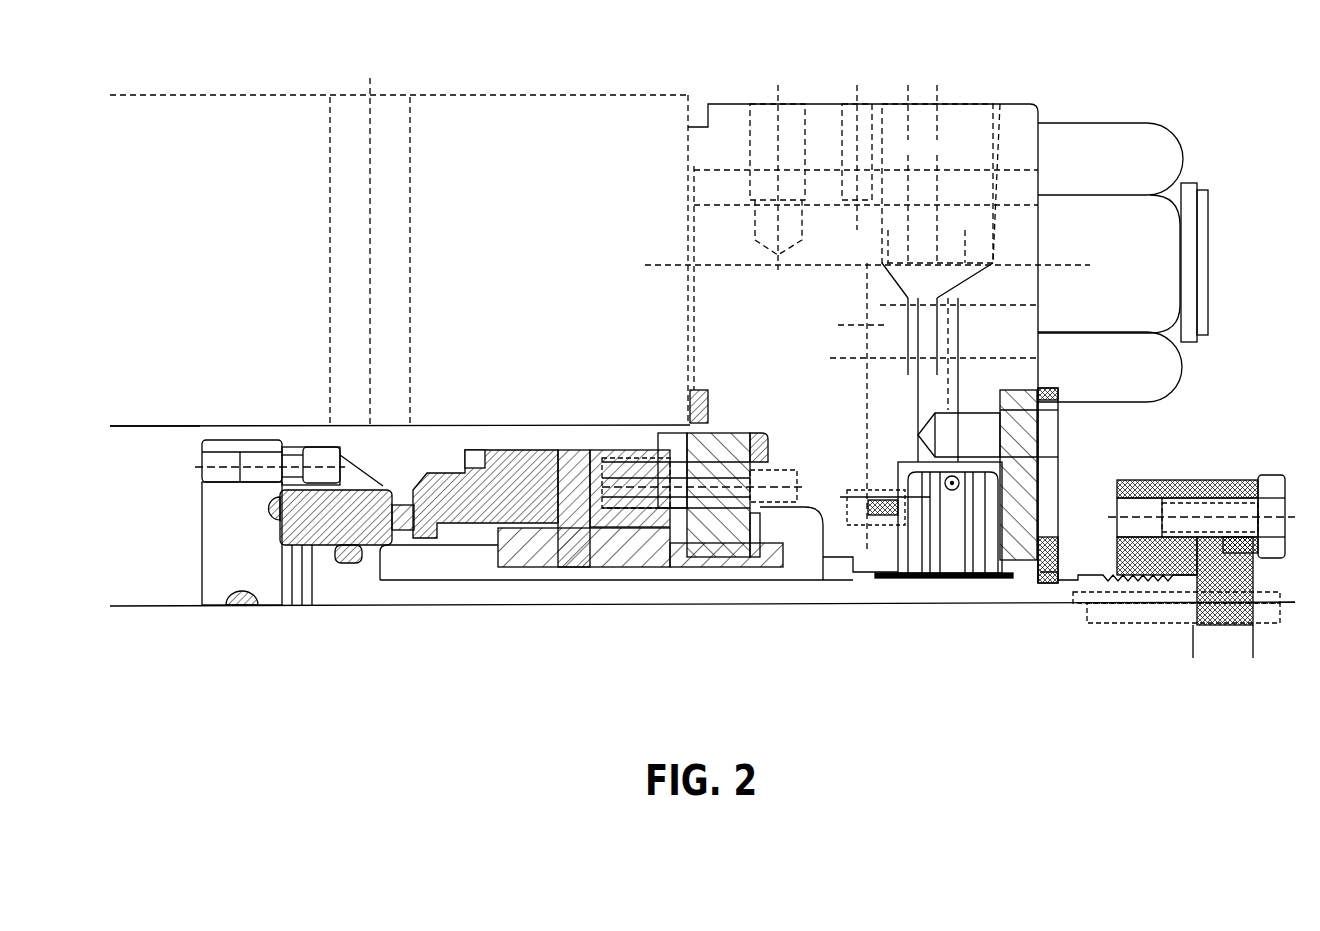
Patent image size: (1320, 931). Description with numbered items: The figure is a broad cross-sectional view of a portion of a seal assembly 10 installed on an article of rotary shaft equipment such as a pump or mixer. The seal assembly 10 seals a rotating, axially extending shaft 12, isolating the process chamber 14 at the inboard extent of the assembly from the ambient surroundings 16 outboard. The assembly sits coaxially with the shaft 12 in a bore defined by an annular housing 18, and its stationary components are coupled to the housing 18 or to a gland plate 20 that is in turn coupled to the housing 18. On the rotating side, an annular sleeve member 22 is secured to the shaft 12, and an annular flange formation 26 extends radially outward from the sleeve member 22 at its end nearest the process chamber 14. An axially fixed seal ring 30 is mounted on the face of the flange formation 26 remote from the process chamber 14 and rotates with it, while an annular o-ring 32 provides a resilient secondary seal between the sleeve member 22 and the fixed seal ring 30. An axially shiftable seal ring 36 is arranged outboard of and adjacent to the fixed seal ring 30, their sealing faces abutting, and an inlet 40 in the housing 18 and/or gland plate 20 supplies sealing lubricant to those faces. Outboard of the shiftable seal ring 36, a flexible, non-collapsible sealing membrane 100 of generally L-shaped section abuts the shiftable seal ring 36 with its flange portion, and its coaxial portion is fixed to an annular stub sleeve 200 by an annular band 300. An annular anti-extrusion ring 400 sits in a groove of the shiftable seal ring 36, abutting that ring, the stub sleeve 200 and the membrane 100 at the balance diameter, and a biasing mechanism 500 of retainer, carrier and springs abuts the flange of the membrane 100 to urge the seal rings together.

The seal assembly 10 is at (273, 426).
The shaft 12 is at (342, 646).
The process chamber 14 is at (147, 514).
The ambient surroundings 16 is at (1220, 444).
The annular housing 18 is at (534, 296).
The gland plate 20 is at (809, 306).
The annular sleeve member 22 is at (350, 594).
The annular flange formation 26 is at (255, 556).
The axially fixed seal ring 30 is at (384, 486).
The annular o-ring 32 is at (360, 565).
The axially shiftable seal ring 36 is at (452, 512).
The inlet 40 is at (358, 195).
The sealing membrane 100 is at (573, 465).
The stub sleeve 200 is at (685, 560).
The annular band 300 is at (620, 557).
The annular anti-extrusion ring 400 is at (540, 557).
The biasing mechanism 500 is at (690, 447).